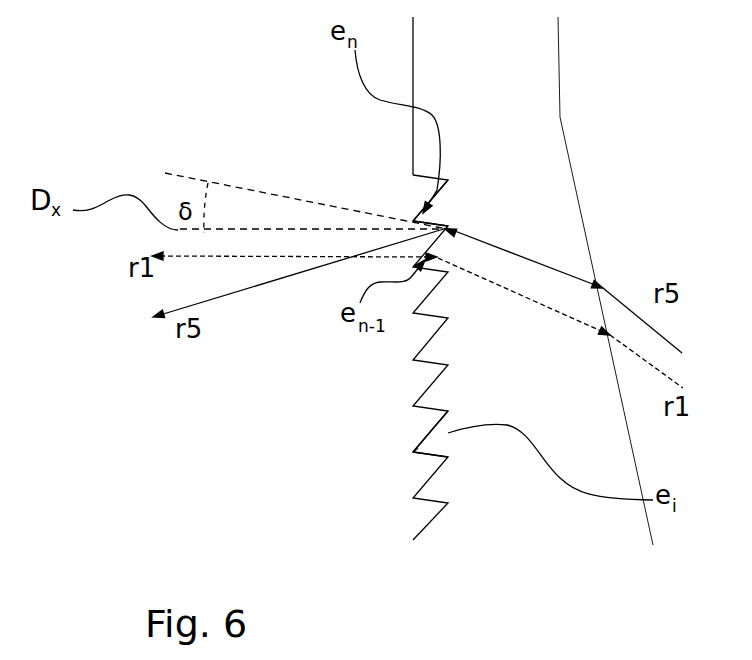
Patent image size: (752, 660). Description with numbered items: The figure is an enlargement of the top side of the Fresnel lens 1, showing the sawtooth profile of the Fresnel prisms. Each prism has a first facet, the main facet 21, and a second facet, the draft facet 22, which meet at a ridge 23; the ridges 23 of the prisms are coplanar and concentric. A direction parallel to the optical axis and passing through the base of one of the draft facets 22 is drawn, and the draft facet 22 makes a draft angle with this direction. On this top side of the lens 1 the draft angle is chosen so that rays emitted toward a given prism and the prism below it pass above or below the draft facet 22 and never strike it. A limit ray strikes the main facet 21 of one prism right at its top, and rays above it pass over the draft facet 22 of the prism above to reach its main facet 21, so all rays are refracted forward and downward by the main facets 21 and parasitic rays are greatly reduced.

The lens 1 is at (481, 278).
The main facet 21 is at (418, 205).
The draft facet 22 is at (432, 217).
The ridge 23 is at (423, 452).